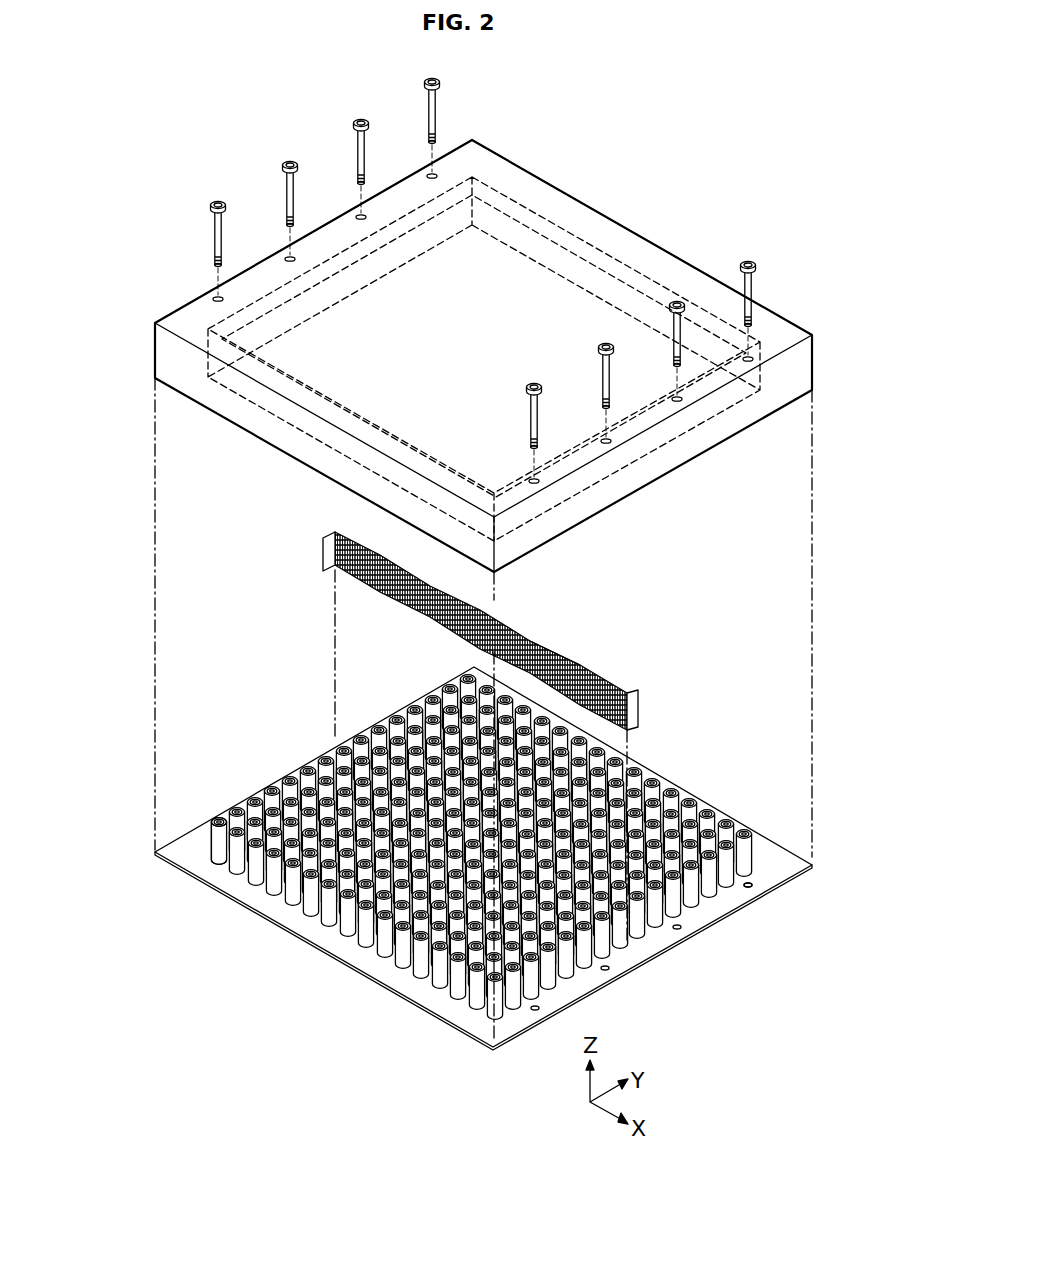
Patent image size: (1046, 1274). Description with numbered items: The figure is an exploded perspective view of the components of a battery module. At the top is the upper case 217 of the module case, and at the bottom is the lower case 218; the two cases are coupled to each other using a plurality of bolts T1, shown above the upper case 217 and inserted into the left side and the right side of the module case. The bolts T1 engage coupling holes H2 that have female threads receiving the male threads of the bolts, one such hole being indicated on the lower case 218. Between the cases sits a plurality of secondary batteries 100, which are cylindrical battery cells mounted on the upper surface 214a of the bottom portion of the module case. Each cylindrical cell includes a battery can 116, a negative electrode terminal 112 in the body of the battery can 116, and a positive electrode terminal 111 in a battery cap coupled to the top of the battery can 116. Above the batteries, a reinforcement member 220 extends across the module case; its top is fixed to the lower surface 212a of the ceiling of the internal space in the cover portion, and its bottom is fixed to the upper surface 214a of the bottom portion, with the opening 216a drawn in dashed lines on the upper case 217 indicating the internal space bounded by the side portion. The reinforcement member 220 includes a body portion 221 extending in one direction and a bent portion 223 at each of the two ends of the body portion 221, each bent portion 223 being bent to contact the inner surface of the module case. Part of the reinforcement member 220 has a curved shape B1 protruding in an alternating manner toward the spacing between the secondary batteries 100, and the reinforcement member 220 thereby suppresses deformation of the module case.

The upper case 217 is at (167, 279).
The bolts T1 is at (290, 161).
The outer recess / opening of the cover plate 216a is at (506, 196).
The lower surface of the ceiling of the internal space 212a is at (560, 251).
The reinforcement member 220 is at (476, 618).
The body portion 221 is at (555, 650).
The bent portion 223 is at (333, 531).
The curved shape B1 is at (536, 650).
The secondary batteries 100 is at (428, 847).
The positive electrode terminal 111 is at (219, 818).
The battery can 116 is at (211, 838).
The negative electrode terminal 112 is at (212, 845).
The lower case 218 is at (488, 858).
The upper surface of the bottom portion 214a is at (647, 945).
The coupling holes H2 is at (754, 888).